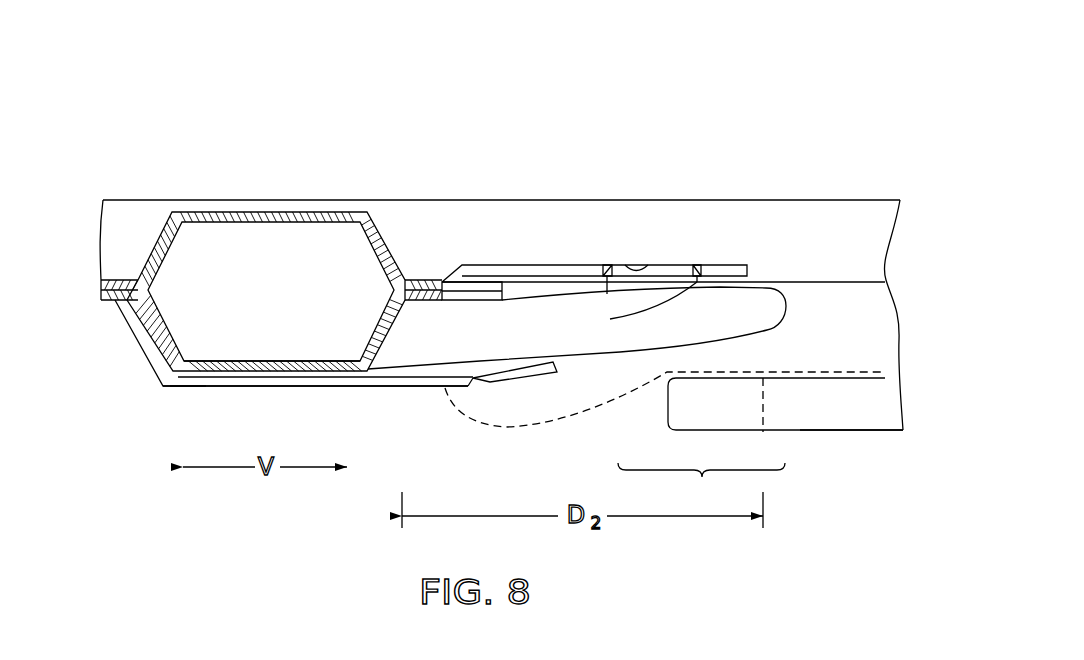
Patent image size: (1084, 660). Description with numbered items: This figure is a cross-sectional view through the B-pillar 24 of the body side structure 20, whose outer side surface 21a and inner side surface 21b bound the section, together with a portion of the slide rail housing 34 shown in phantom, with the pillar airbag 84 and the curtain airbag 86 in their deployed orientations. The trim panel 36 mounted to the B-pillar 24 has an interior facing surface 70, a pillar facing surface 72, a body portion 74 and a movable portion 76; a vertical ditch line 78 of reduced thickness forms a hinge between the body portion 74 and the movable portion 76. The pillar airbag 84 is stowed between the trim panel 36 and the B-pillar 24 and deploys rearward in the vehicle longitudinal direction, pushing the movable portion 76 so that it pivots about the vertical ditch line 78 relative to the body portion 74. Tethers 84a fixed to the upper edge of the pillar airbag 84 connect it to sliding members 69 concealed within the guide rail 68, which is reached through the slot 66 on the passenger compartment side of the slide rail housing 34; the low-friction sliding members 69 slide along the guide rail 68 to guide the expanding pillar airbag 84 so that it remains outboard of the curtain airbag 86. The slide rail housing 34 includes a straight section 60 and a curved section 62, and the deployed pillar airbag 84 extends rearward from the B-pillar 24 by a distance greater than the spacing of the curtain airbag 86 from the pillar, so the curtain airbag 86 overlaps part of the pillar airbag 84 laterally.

The body side structure 20 is at (703, 127).
The outer side surface 21a is at (783, 200).
The inner side surface 21b is at (109, 300).
The B-pillar 24 is at (232, 213).
The slide rail housing 34 is at (701, 484).
The trim panel 36 is at (188, 389).
The straight section 60 is at (763, 432).
The curved section 62 is at (578, 420).
The slot 66 is at (545, 284).
The guide rail 68 is at (643, 266).
The sliding members 69 is at (605, 267).
The interior facing surface 70 is at (238, 388).
The pillar facing surface 72 is at (268, 372).
The body portion 74 is at (293, 388).
The movable portion 76 is at (516, 373).
The vertical ditch line 78 is at (477, 383).
The pillar airbag 84 is at (412, 343).
The tethers 84a is at (608, 289).
The curtain airbag 86 is at (843, 405).